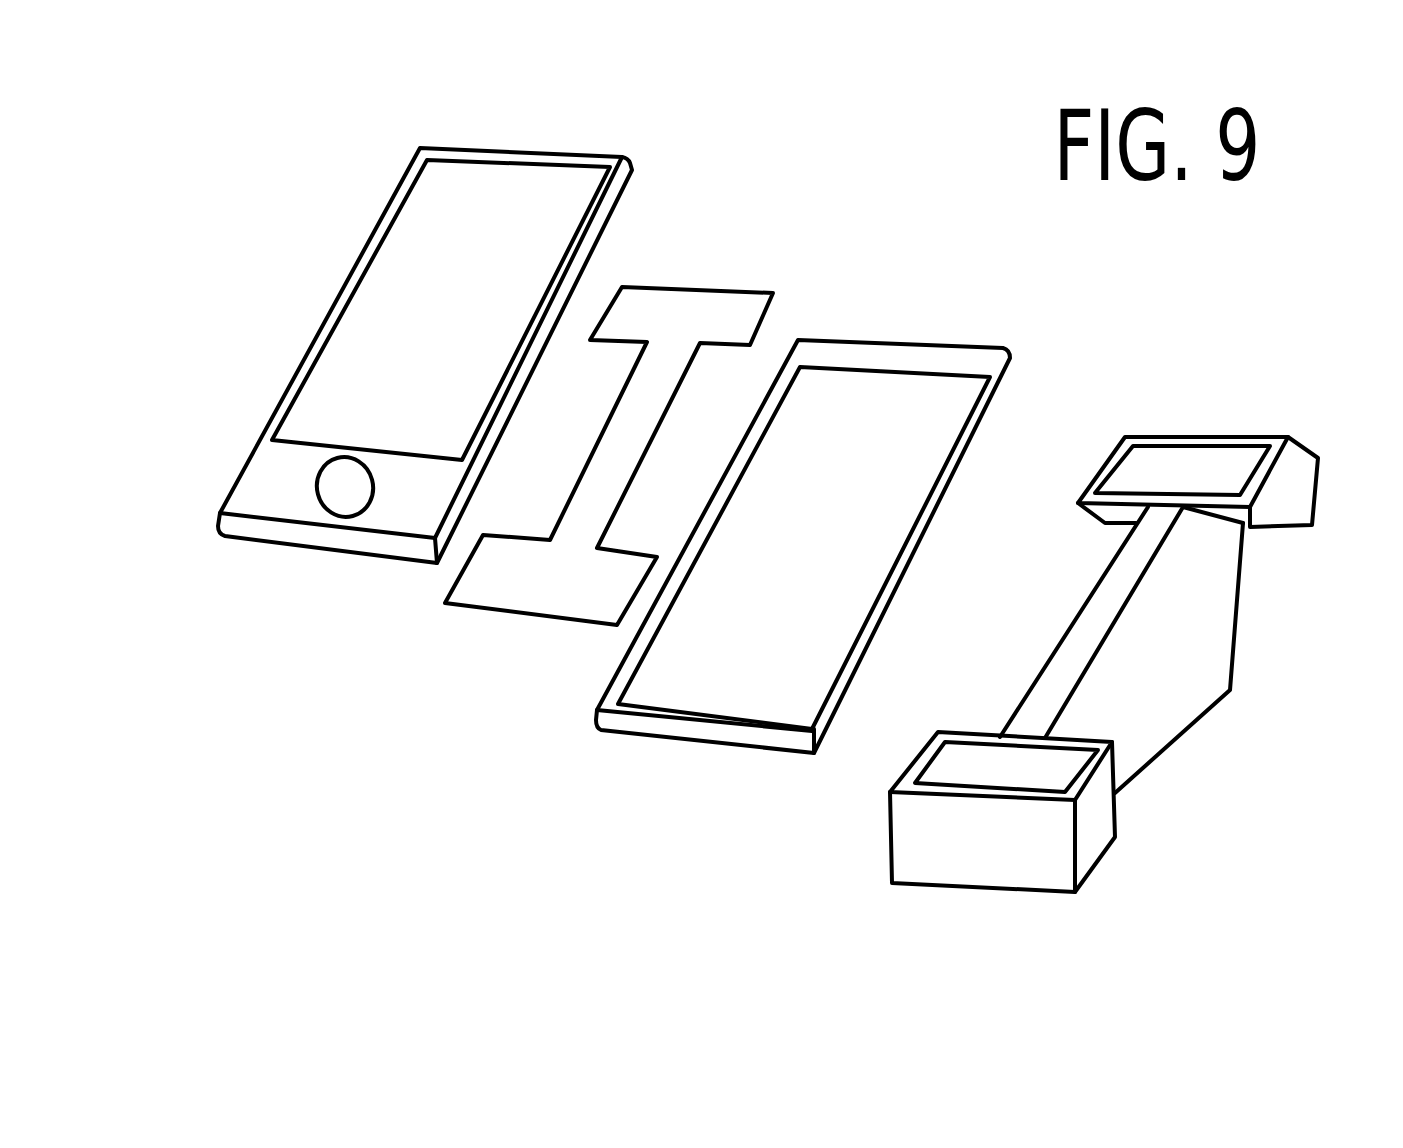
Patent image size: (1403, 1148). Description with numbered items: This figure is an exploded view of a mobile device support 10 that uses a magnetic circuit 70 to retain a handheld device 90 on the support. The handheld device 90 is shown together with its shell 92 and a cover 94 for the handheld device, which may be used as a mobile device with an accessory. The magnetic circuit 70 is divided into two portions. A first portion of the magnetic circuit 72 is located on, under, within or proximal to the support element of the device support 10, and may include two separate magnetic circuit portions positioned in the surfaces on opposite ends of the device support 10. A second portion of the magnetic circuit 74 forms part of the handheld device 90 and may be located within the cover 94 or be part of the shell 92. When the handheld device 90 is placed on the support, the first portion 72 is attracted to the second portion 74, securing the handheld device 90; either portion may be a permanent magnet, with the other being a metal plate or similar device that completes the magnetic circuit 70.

The mobile device support 10 is at (1055, 613).
The magnetic circuit 70 is at (881, 561).
The first portion of the magnetic circuit 72 is at (1170, 467).
The second portion of the magnetic circuit 74 is at (705, 288).
The handheld device 90 is at (614, 406).
The shell 92 is at (280, 502).
The cover 94 is at (890, 518).